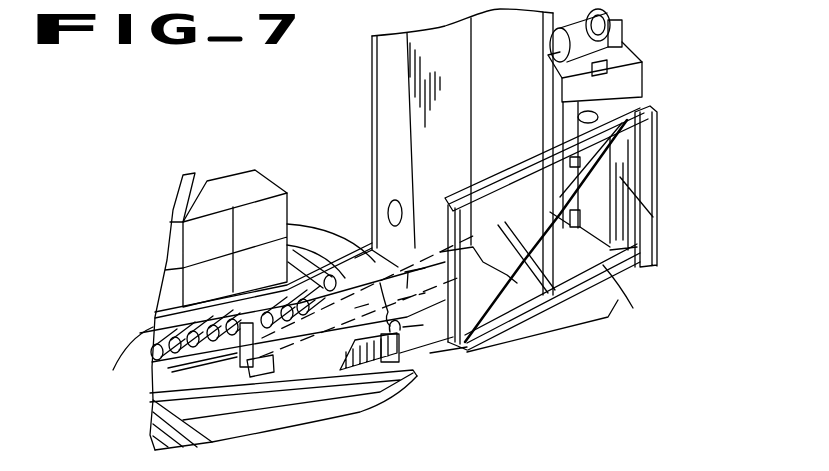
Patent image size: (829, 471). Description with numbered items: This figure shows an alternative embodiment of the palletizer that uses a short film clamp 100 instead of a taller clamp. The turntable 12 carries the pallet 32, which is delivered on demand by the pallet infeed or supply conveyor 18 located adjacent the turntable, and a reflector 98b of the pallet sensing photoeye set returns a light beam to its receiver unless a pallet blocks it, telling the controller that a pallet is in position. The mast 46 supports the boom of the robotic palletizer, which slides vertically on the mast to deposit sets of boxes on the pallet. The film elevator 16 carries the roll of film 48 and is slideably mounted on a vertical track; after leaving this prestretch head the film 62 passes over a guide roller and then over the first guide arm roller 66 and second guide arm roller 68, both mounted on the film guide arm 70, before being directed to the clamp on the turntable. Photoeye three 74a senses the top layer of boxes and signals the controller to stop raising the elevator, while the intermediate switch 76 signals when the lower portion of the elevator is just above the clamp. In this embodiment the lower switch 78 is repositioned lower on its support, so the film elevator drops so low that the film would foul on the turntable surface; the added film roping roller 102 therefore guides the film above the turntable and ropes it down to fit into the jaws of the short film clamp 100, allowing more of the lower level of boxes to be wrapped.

The turntable 12 is at (310, 210).
The film elevator 16 is at (650, 37).
The pallet infeed or supply conveyor 18 is at (152, 427).
The pallet 32 is at (155, 407).
The mast 46 is at (372, 78).
The roll of film 48 is at (640, 132).
The film 62 is at (603, 265).
The first guide arm roller 66 is at (658, 254).
The second guide arm roller 68 is at (483, 355).
The film guide arm 70 is at (637, 273).
The photoeye three 74a is at (612, 76).
The intermediate switch 76 is at (557, 152).
The lower switch 78 is at (556, 218).
The reflector 98b is at (387, 207).
The short film clamp 100 is at (221, 358).
The film roping roller 102 is at (398, 342).